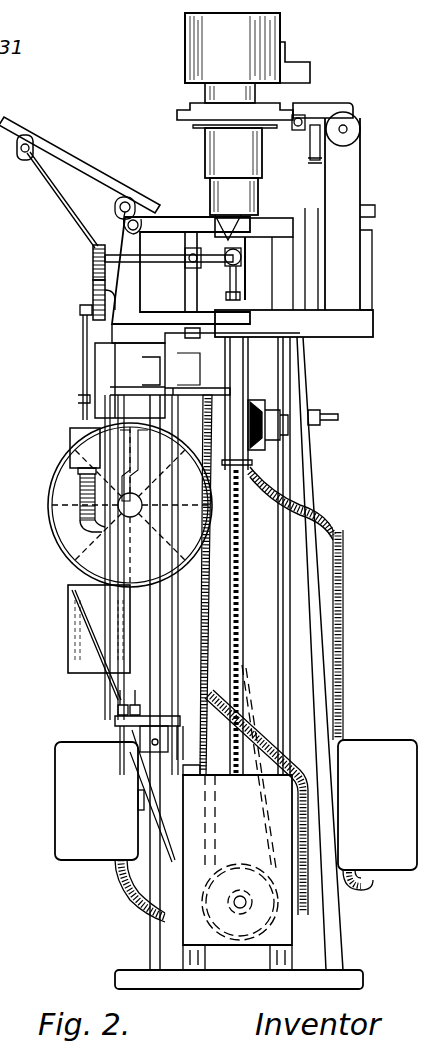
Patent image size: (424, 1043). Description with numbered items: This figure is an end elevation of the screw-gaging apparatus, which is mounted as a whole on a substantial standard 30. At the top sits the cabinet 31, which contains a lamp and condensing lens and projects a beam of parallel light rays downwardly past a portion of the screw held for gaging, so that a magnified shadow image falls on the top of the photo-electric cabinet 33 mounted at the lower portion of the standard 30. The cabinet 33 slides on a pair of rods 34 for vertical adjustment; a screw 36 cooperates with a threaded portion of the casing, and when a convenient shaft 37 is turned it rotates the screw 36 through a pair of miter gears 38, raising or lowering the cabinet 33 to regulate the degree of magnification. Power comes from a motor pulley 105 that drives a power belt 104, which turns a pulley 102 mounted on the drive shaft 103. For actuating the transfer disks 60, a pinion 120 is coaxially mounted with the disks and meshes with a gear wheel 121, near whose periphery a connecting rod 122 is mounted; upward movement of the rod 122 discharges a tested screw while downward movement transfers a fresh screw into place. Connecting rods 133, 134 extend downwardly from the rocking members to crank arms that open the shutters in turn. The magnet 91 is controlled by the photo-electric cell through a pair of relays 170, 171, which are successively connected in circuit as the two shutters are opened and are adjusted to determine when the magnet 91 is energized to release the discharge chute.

The cabinet 31 is at (185, 50).
The transfer disks 60 is at (258, 231).
The pinion 120 is at (93, 258).
The gear wheel 121 is at (93, 285).
The connecting rod 122 is at (85, 345).
The shaft 37 is at (324, 414).
The magnet 91 is at (72, 435).
The miter gears 38 is at (262, 437).
The pulley 102 is at (107, 505).
The drive shaft 103 is at (106, 530).
The power belt 104 is at (66, 575).
The screw 36 is at (236, 580).
The standard 30 is at (308, 573).
The rods 34 is at (285, 684).
The relay 171 is at (393, 745).
The connecting rod 134 is at (118, 752).
The connecting rod 133 is at (133, 775).
The relay 170 is at (65, 832).
The pulley 105 is at (240, 866).
The photo-electric cabinet 33 is at (190, 866).